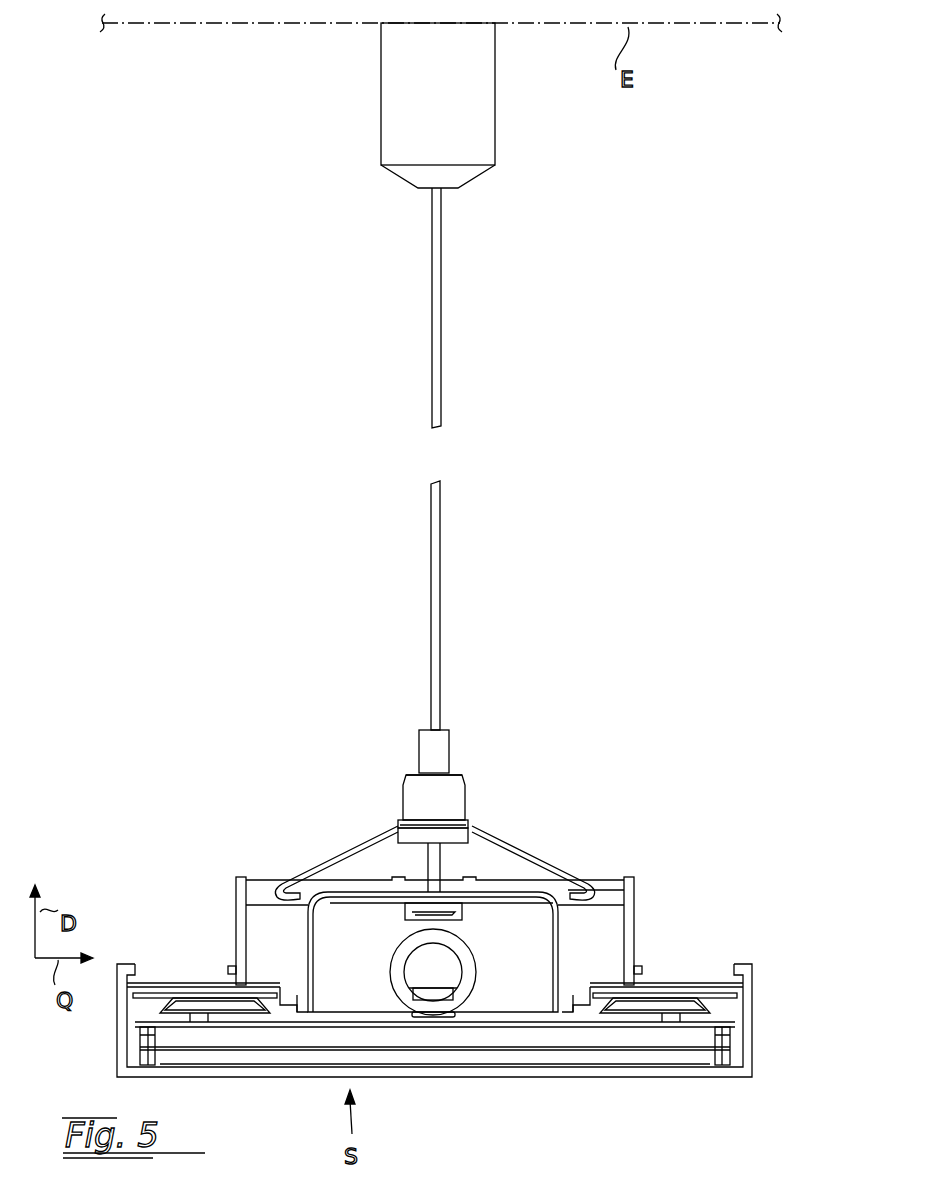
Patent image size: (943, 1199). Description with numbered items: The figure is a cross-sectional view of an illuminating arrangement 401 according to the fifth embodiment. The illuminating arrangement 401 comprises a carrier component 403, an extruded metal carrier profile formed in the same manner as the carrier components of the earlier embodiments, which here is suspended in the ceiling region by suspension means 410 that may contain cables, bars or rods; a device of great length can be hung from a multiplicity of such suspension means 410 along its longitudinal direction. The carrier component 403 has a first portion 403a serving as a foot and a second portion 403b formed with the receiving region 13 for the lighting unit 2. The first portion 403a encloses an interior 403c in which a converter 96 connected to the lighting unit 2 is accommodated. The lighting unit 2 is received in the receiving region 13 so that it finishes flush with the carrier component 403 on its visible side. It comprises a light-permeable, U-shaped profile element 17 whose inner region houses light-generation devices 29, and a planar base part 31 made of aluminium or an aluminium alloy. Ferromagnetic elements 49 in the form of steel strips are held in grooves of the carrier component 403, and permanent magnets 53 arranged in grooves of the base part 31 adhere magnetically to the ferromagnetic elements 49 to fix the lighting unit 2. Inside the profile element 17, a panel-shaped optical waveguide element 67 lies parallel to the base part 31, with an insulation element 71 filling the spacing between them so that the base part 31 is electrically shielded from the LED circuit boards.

The illuminating arrangement 401 is at (150, 143).
The suspension means 410 is at (441, 318).
The converter 96 is at (502, 910).
The carrier component 403 is at (632, 906).
The first portion 403a is at (206, 970).
The second portion 403b is at (771, 965).
The interior 403c is at (606, 961).
The ferromagnetic element 49 is at (640, 992).
The permanent magnet 53 is at (672, 1008).
The planar base part 31 is at (287, 1015).
The insulation element 71 is at (455, 1027).
The optical waveguide element 67 is at (385, 1040).
The profile element 17 is at (568, 1070).
The light-generation devices 29 is at (160, 1054).
The receiving region 13 is at (705, 1050).
The lighting unit 2 is at (481, 1100).